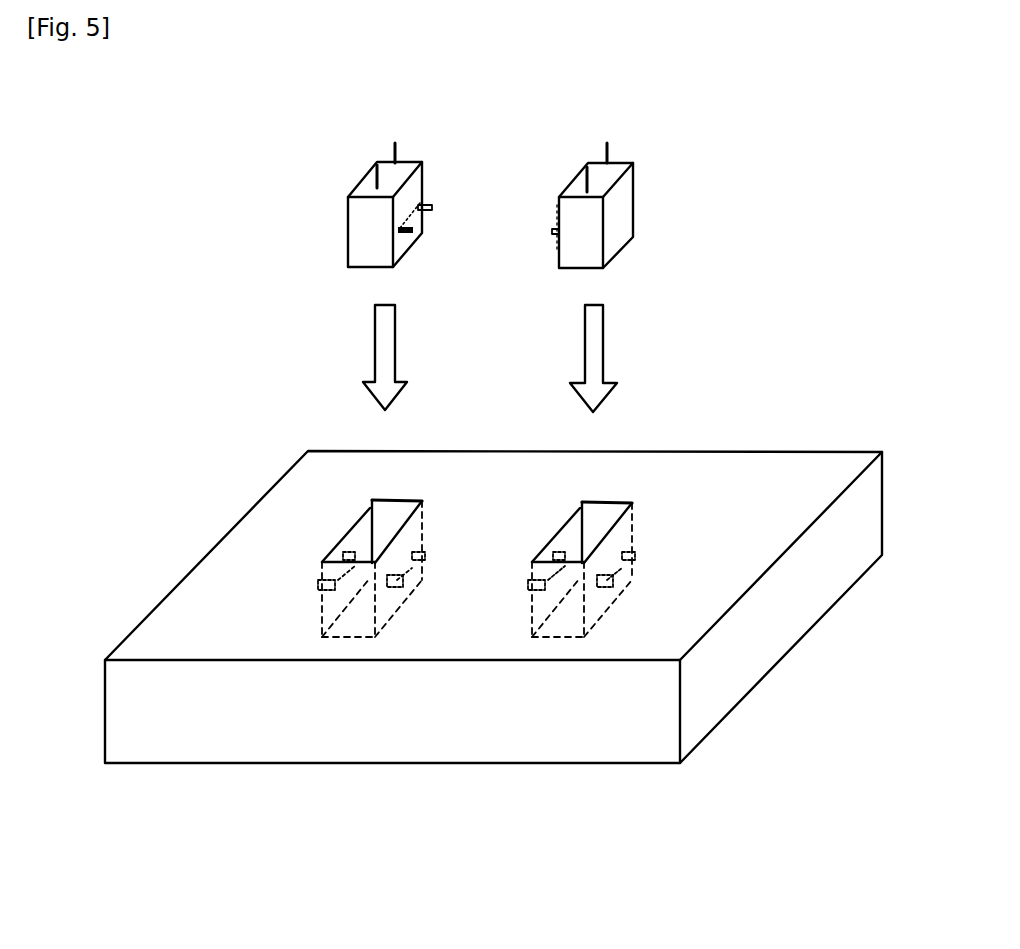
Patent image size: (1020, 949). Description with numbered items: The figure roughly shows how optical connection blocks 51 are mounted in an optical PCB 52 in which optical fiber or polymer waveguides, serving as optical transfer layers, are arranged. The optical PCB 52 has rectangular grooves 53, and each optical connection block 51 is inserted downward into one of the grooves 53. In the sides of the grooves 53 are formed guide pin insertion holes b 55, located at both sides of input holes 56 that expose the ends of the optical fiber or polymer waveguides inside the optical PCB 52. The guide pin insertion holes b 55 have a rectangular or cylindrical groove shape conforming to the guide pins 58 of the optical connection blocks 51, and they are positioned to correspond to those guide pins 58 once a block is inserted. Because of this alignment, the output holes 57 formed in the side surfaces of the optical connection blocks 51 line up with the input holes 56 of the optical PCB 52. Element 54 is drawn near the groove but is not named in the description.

The optical connection block 51 is at (345, 177).
The optical PCB 52 is at (222, 592).
The rectangular groove 53 is at (373, 528).
The terminal hole 54 is at (423, 542).
The guide pin insertion hole b 55 is at (327, 600).
The input hole 56 is at (412, 563).
The output hole 57 is at (418, 225).
The guide pin 58 is at (435, 195).